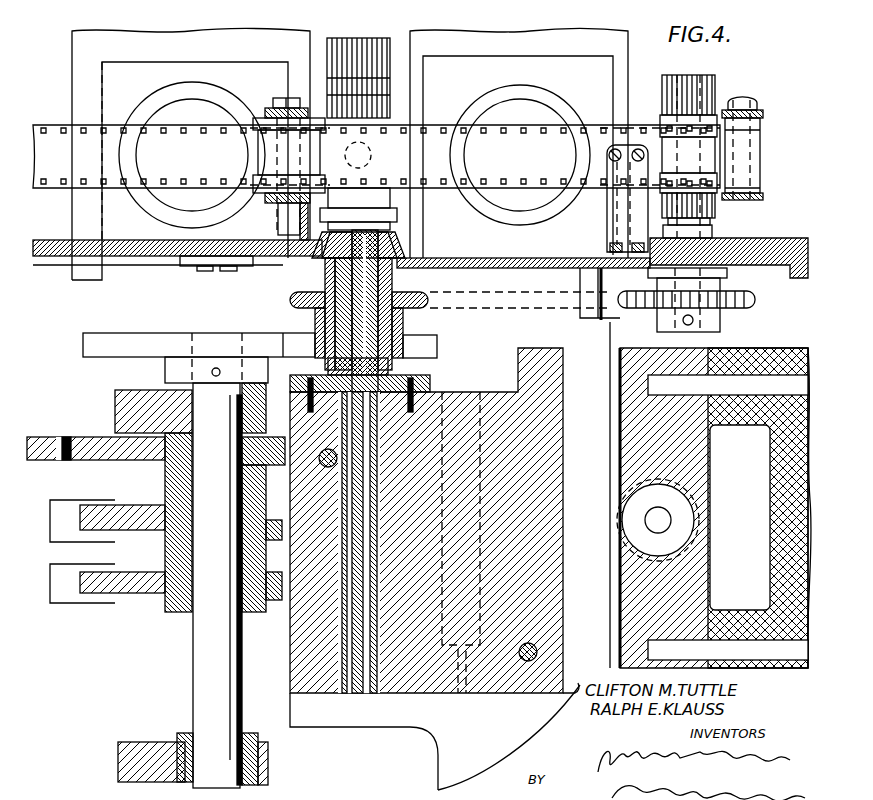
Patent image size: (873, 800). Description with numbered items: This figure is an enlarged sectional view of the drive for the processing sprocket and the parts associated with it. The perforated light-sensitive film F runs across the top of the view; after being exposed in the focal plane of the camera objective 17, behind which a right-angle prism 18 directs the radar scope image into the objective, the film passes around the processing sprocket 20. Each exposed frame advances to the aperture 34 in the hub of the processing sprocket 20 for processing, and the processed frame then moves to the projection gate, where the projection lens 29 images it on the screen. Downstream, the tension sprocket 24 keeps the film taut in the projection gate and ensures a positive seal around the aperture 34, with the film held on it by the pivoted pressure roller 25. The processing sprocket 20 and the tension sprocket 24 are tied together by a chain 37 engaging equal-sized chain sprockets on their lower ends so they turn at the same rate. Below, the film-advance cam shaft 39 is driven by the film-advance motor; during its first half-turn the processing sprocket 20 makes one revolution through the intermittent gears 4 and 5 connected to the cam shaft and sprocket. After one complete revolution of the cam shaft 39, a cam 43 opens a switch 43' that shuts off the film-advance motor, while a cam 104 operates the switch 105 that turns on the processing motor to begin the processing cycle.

The right-angle prism 18 is at (185, 70).
The camera objective 17 is at (180, 122).
The projection lens 29 is at (519, 143).
The perforated light-sensitive film F is at (52, 125).
The aperture 34 is at (371, 149).
The processing sprocket 20 is at (392, 196).
The intermittent gear 5 is at (438, 347).
The chain 37 is at (536, 308).
The tension sprocket 24 is at (688, 156).
The pivoted pressure roller 25 is at (756, 144).
The intermittent gear 4 is at (93, 354).
The film-advance cam shaft 39 is at (197, 654).
The switch 105 is at (72, 498).
The cam 104 is at (142, 500).
The cam 43 is at (107, 570).
The switch 43' is at (75, 601).